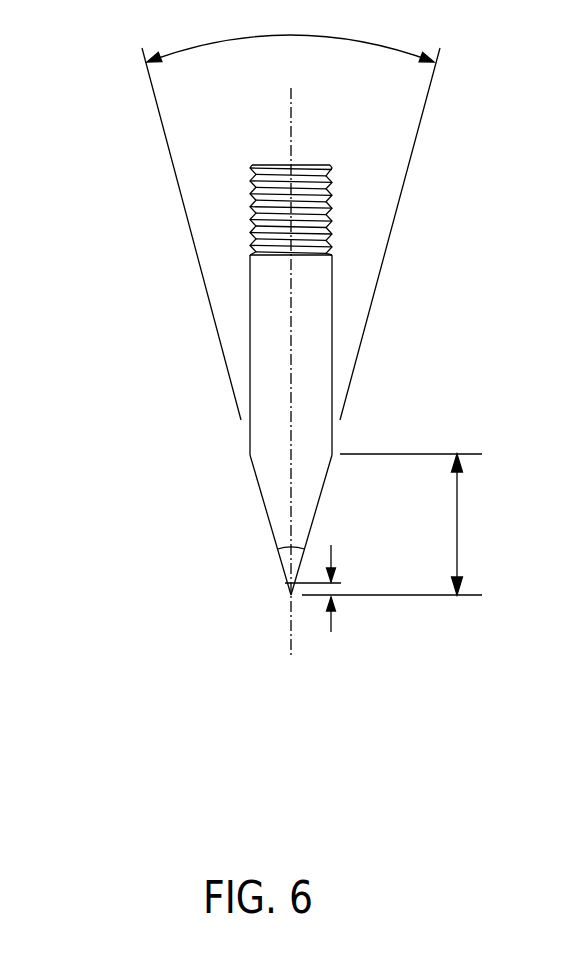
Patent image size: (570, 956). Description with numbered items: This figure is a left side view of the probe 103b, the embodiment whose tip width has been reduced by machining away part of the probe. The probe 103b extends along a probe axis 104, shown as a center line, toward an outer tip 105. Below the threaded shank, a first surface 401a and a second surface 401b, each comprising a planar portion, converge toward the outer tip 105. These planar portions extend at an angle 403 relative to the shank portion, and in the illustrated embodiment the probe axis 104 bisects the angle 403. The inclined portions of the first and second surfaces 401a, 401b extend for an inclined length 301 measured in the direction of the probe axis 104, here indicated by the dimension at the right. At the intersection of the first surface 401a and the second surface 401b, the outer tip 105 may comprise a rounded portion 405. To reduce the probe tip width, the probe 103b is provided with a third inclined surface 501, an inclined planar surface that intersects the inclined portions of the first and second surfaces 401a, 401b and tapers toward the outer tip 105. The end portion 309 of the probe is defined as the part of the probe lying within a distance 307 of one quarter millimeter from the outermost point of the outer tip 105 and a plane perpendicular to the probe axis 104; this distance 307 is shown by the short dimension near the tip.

The angle 403 is at (293, 38).
The probe axis 104 is at (297, 127).
The probe 103b is at (246, 347).
The first surface 401a is at (265, 522).
The second surface 401b is at (318, 517).
The third inclined surface 501 is at (287, 568).
The inclined length 301 is at (458, 527).
The distance 307 is at (331, 557).
The outer tip 105 is at (293, 598).
The end portion 309 is at (285, 585).
The rounded portion 405 is at (283, 602).